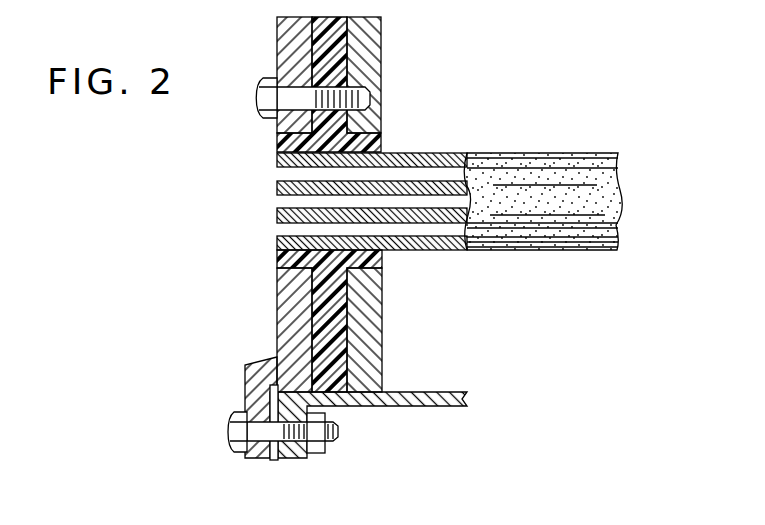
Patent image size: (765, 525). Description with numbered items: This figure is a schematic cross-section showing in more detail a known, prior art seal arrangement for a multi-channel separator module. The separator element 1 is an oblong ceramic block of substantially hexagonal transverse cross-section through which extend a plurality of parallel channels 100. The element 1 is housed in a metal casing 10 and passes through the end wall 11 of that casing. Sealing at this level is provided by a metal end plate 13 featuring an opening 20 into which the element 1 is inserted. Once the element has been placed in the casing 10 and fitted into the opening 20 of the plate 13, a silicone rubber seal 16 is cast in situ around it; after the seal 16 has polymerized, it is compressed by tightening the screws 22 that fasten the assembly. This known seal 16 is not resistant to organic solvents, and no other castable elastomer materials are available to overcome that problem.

The separator element 1 is at (551, 175).
The metal casing 10 is at (387, 407).
The end wall 11 is at (358, 37).
The metal end plate 13 is at (290, 318).
The silicone rubber seal 16 is at (340, 60).
The opening 20 is at (290, 243).
The screw 22 is at (262, 97).
The parallel channels 100 is at (423, 232).